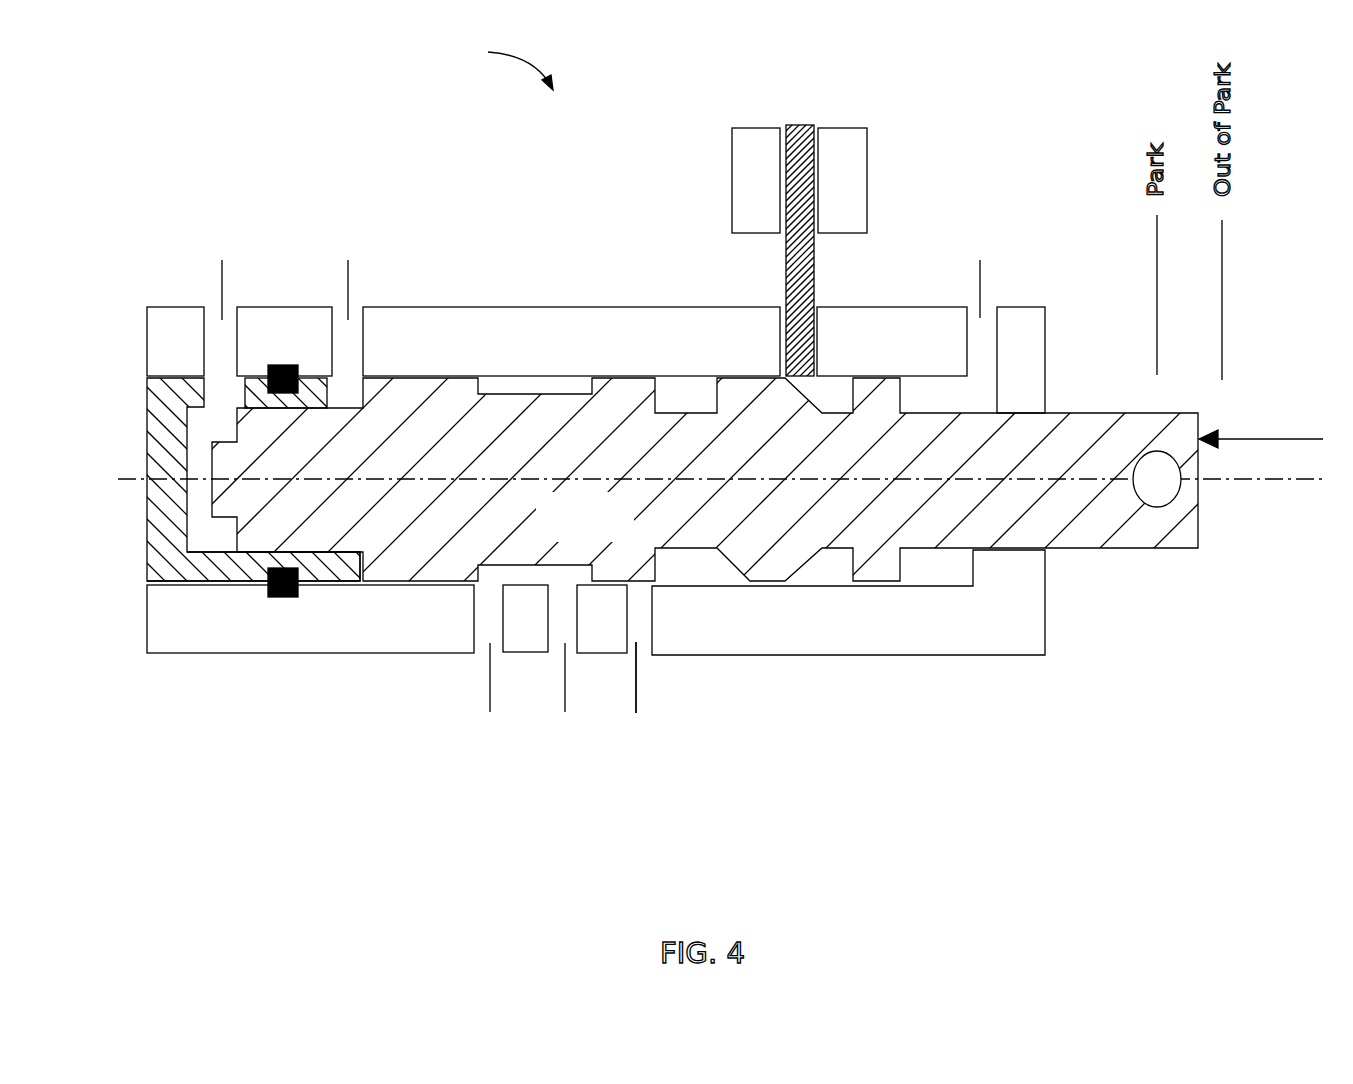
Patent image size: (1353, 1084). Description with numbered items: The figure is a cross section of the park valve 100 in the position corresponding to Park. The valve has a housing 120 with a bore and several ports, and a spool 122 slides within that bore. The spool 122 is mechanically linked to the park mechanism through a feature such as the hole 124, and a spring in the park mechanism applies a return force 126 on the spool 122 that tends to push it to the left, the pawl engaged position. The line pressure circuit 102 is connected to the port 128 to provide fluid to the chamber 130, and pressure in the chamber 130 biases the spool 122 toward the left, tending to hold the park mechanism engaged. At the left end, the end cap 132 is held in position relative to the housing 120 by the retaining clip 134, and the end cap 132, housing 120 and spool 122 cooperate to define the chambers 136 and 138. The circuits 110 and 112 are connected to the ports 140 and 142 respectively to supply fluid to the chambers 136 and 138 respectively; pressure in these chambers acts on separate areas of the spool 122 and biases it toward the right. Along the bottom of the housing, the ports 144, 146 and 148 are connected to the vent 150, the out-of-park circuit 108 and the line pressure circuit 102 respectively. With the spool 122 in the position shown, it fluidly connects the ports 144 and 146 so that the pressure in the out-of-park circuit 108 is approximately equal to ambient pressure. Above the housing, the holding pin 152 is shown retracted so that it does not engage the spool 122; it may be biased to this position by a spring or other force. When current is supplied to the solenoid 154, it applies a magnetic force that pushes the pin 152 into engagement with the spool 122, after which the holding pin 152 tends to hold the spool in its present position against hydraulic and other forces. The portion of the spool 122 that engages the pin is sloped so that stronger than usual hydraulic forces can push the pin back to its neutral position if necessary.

The park valve 100 is at (489, 66).
The line pressure circuit 102 is at (812, 483).
The out-of-park circuit 108 is at (568, 749).
The circuit 110 is at (348, 201).
The circuit 112 is at (222, 201).
The housing 120 is at (615, 307).
The spool 122 is at (600, 530).
The hole 124 is at (1157, 508).
The return force 126 is at (1288, 440).
The port 128 is at (973, 318).
The chamber 130 is at (940, 567).
The end cap 132 is at (172, 423).
The retaining clip 134 is at (282, 598).
The chamber 136 is at (343, 393).
The chamber 138 is at (198, 520).
The port 140 is at (352, 360).
The port 142 is at (222, 355).
The port 144 is at (483, 617).
The port 146 is at (560, 623).
The port 148 is at (635, 623).
The vent 150 is at (493, 753).
The holding pin 152 is at (786, 272).
The solenoid 154 is at (732, 168).